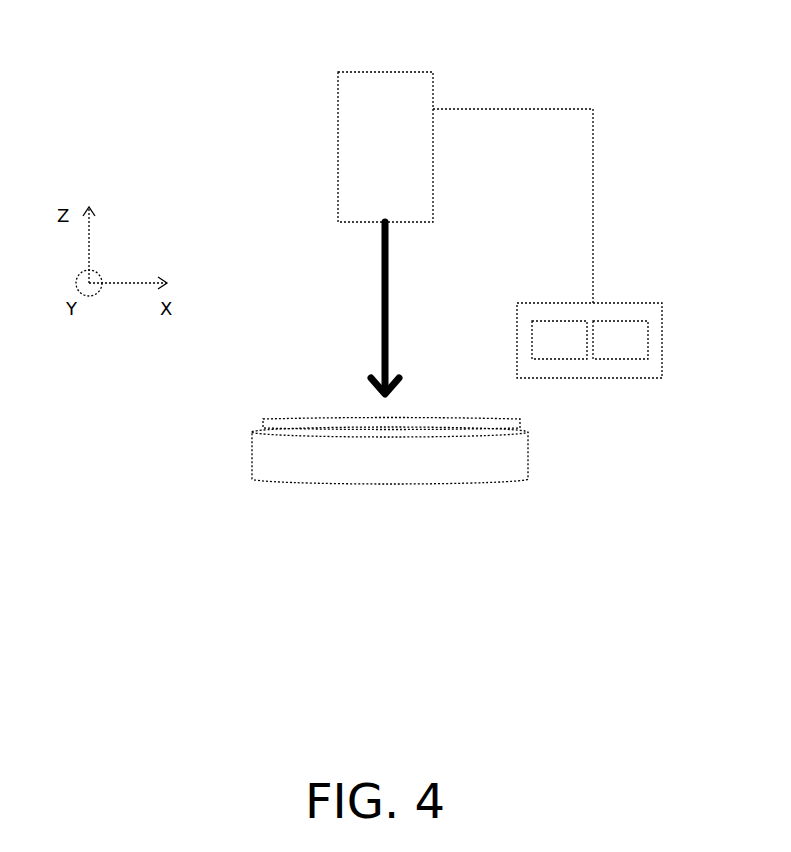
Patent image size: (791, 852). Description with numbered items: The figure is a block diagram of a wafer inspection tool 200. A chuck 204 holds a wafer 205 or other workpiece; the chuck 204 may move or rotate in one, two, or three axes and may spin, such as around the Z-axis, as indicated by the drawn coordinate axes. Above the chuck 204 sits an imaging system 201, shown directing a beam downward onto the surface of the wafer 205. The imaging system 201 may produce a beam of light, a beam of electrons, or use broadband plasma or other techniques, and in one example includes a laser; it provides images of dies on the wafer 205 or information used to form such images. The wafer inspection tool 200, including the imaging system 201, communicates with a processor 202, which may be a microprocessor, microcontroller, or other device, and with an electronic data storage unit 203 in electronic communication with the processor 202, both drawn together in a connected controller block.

The wafer inspection tool 200 is at (224, 92).
The imaging system 201 is at (368, 159).
The processor 202 is at (541, 351).
The electronic data storage unit 203 is at (602, 351).
The chuck 204 is at (297, 482).
The wafer 205 is at (320, 418).